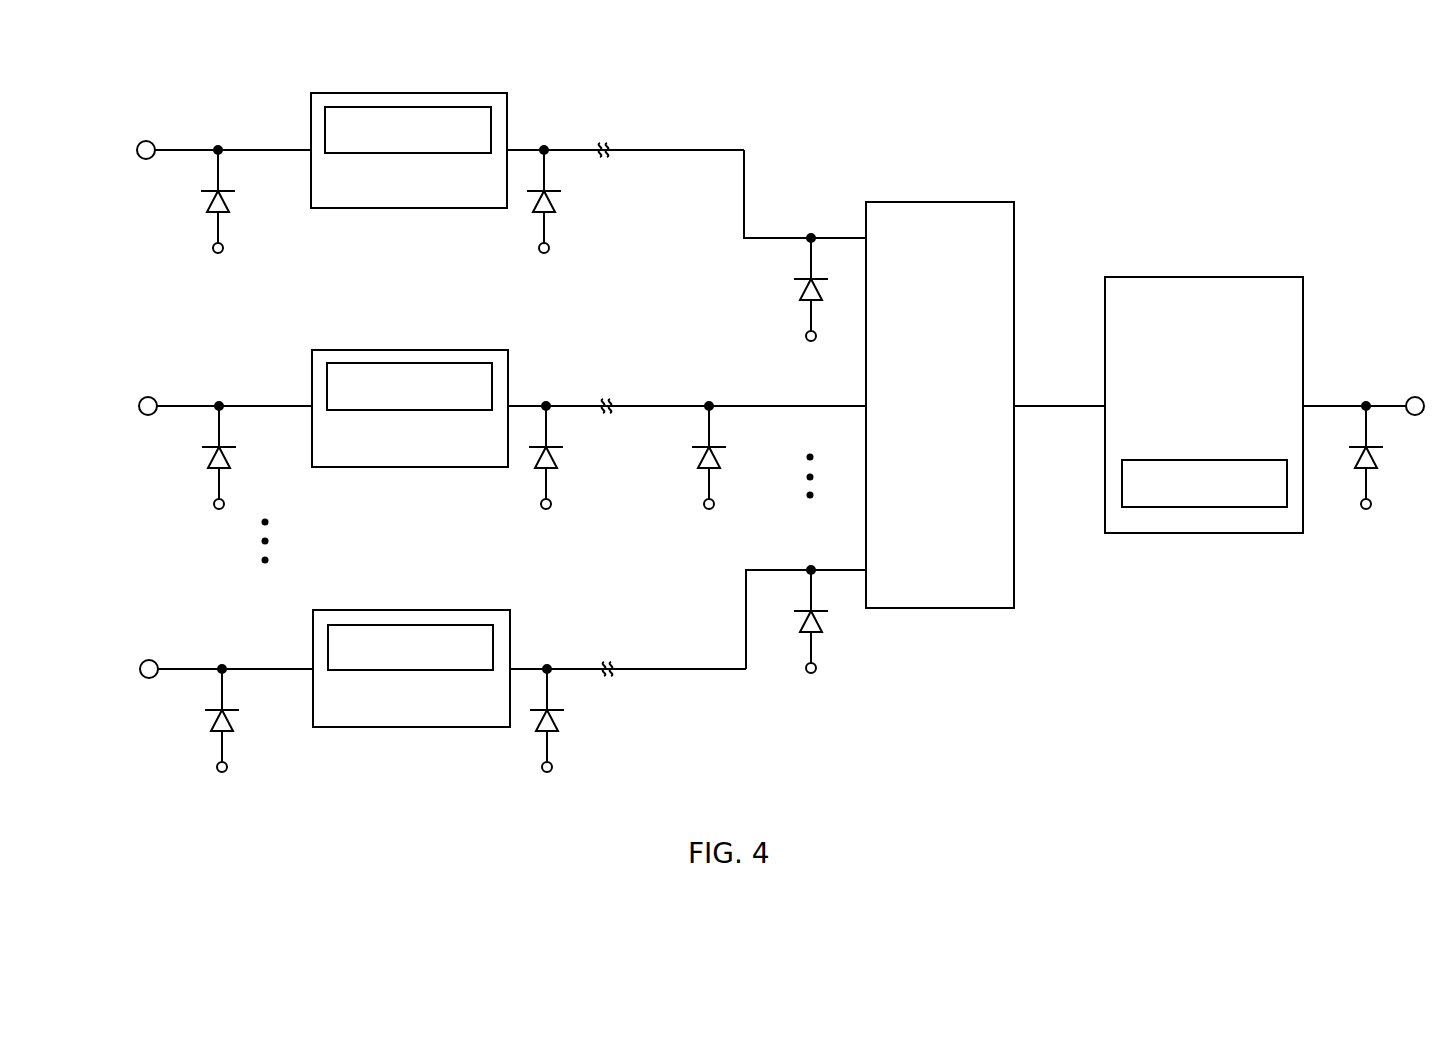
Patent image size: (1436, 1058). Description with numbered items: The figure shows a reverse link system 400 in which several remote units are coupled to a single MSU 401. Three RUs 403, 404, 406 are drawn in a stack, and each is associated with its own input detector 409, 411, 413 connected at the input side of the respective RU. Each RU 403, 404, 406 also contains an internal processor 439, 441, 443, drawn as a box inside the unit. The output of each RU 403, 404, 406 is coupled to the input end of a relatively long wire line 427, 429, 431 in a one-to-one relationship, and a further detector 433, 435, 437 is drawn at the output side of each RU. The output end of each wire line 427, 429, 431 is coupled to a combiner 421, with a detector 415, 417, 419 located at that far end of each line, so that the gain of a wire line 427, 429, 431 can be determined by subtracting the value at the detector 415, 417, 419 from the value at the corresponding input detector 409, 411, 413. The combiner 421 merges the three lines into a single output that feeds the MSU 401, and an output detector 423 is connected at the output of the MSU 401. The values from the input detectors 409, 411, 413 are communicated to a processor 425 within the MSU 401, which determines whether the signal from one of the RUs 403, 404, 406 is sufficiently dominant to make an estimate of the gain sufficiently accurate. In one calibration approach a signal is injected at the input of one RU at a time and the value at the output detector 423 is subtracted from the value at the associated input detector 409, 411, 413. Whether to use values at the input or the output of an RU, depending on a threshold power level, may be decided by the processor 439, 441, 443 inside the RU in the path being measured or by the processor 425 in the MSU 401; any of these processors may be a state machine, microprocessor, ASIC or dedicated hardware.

The reverse link system 400 is at (1284, 87).
The MSU 401 is at (1237, 277).
The RU 403 is at (425, 93).
The RU 404 is at (425, 350).
The RU 406 is at (425, 610).
The input detector 409 is at (218, 254).
The input detector 411 is at (219, 510).
The input detector 413 is at (222, 773).
The detector 415 is at (811, 341).
The detector 417 is at (709, 510).
The detector 419 is at (811, 673).
The combiner 421 is at (945, 202).
The output detector 423 is at (1366, 510).
The processor 425 is at (1225, 460).
The wire line 427 is at (647, 150).
The wire line 429 is at (648, 406).
The wire line 431 is at (650, 669).
The diode 433 is at (544, 254).
The diode 435 is at (546, 510).
The diode 437 is at (547, 773).
The processor 439 is at (325, 119).
The processor 441 is at (327, 375).
The processor 443 is at (328, 637).